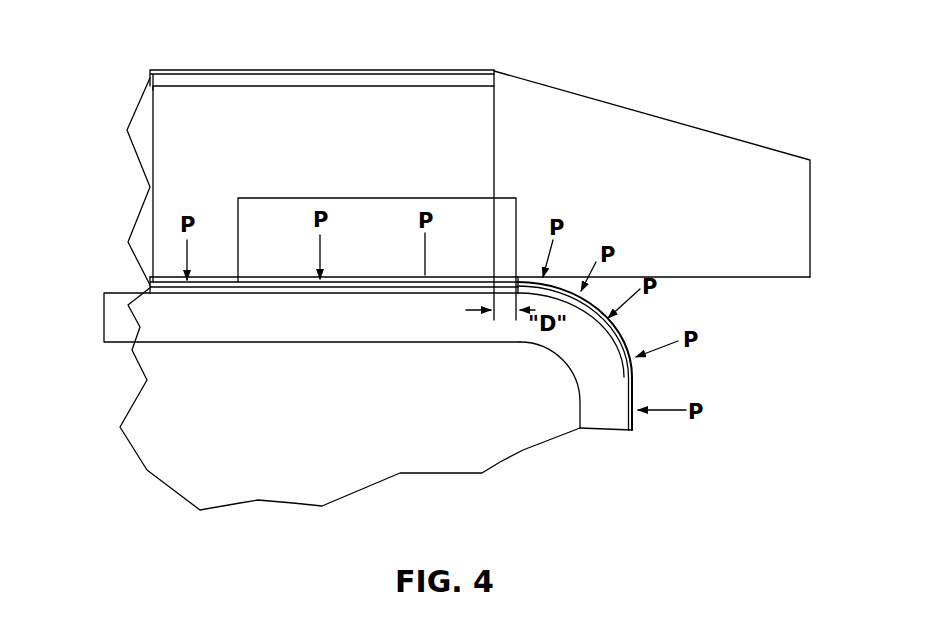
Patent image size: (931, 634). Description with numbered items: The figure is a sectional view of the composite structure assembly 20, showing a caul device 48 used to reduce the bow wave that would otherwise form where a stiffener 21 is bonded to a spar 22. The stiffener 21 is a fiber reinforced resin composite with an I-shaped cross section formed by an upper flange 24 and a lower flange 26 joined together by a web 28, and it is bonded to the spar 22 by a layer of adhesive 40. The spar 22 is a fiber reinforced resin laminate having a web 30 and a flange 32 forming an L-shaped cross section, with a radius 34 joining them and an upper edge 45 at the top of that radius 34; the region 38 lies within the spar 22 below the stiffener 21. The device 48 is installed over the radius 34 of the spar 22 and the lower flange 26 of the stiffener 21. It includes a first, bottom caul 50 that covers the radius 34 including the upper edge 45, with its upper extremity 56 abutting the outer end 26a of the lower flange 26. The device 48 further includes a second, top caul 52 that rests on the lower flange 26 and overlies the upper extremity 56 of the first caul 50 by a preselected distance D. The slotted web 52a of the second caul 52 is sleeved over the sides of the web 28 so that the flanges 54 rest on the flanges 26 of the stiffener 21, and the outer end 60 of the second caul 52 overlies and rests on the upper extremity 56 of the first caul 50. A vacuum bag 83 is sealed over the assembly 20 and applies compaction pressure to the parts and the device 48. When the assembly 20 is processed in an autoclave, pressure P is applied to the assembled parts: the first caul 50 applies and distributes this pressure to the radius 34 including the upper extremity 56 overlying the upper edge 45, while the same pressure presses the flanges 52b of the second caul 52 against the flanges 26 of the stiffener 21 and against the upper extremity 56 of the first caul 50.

The composite structure assembly 20 is at (90, 237).
The stiffener 21 is at (114, 128).
The spar 22 is at (96, 329).
The upper flange 24 is at (168, 80).
The lower flange 26 is at (170, 287).
The outer end 26a is at (484, 287).
The web 28 is at (324, 172).
The web 30 is at (172, 327).
The flange 32 is at (605, 413).
The radius 34 is at (581, 323).
The lower region 38 is at (356, 432).
The layer of adhesive 40 is at (271, 294).
The upper edge 45 is at (503, 320).
The device 48 is at (535, 222).
The first caul 50 is at (598, 318).
The second caul 52 is at (413, 210).
The slotted web 52a is at (257, 210).
The flanges 52b is at (253, 283).
The flanges 54 is at (322, 284).
The upper extremity 56 is at (520, 292).
The outer end 60 is at (503, 275).
The vacuum bag 83 is at (770, 213).